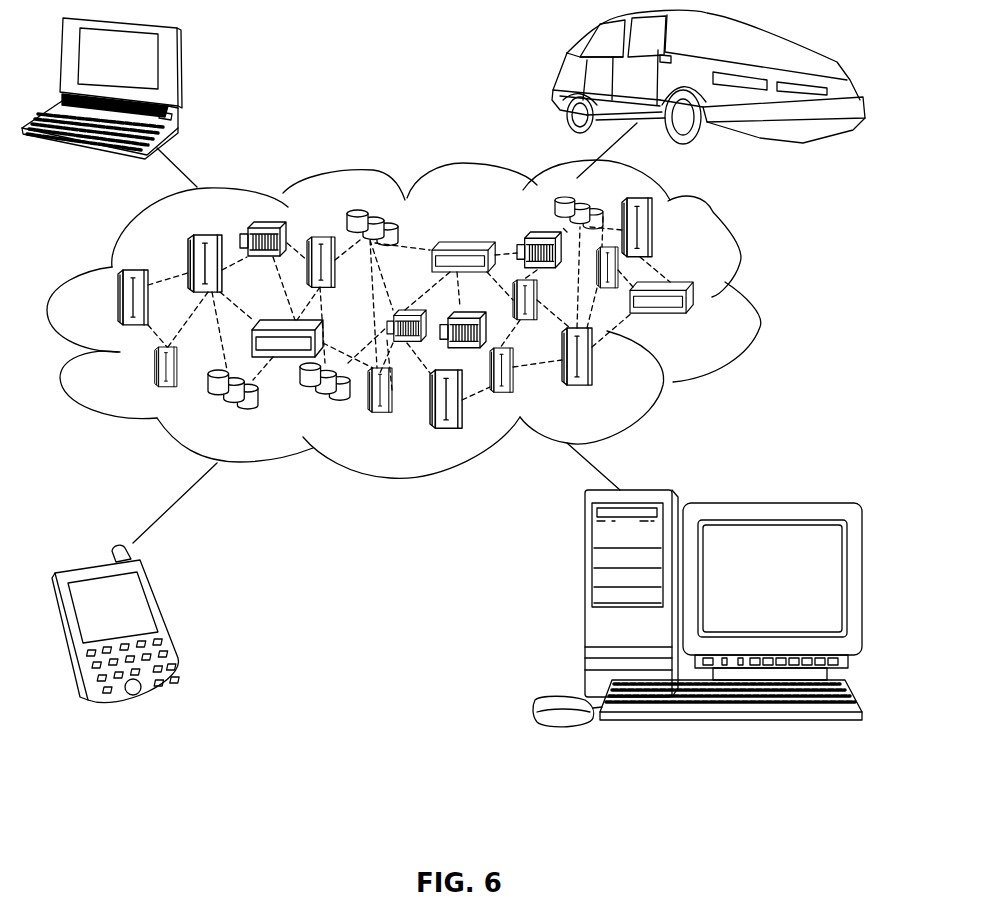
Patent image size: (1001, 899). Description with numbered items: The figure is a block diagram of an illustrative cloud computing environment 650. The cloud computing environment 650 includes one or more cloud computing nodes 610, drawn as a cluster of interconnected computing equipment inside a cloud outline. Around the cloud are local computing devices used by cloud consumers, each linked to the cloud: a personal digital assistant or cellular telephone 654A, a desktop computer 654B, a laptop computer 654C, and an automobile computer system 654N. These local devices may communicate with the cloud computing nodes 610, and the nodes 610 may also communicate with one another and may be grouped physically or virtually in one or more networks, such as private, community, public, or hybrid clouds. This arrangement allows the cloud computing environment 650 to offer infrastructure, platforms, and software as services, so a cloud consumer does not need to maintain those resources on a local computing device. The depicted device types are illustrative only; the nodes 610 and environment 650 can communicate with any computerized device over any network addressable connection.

The cloud computing environment 650 is at (740, 262).
The cloud computing nodes 610 is at (717, 318).
The personal digital assistant or cellular telephone 654A is at (168, 620).
The desktop computer 654B is at (585, 600).
The laptop computer 654C is at (177, 62).
The automobile computer system 654N is at (560, 70).